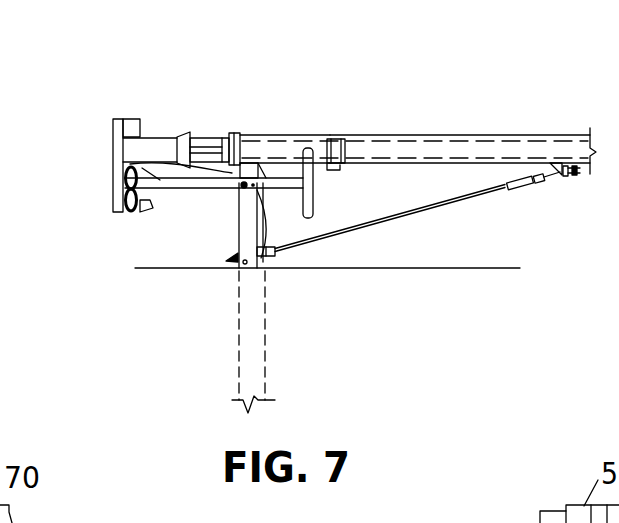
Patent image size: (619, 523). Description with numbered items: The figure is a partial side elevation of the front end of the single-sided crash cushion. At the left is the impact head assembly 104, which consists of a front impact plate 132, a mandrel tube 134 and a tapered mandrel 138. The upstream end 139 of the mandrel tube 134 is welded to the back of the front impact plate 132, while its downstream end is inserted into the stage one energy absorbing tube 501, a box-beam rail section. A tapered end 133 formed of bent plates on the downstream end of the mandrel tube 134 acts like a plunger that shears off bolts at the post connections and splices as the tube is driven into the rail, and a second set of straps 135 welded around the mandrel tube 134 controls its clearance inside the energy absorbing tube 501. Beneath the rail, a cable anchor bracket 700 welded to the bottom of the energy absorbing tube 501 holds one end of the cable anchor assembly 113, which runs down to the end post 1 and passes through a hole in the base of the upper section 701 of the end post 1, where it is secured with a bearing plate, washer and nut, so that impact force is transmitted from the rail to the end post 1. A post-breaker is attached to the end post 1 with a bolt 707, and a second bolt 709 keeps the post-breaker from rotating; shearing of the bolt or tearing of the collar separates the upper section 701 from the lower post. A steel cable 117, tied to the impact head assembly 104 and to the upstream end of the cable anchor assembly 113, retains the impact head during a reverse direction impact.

The impact head assembly 104 is at (132, 118).
The upstream end of the mandrel tube 139 is at (150, 137).
The tapered mandrel 138 is at (184, 133).
The mandrel tube 134 is at (263, 153).
The tapered end 133 is at (343, 136).
The stage one energy absorbing tube 501 is at (408, 136).
The front impact plate 132 is at (113, 165).
The second set of straps 135 is at (235, 183).
The steel cable 117 is at (147, 207).
The end post 1 is at (240, 225).
The bolt 707 is at (240, 190).
The cable anchor bracket 700 is at (238, 270).
The second bolt 709 is at (254, 184).
The upper section of the end post 701 is at (263, 268).
The cable anchor assembly 113 is at (421, 211).